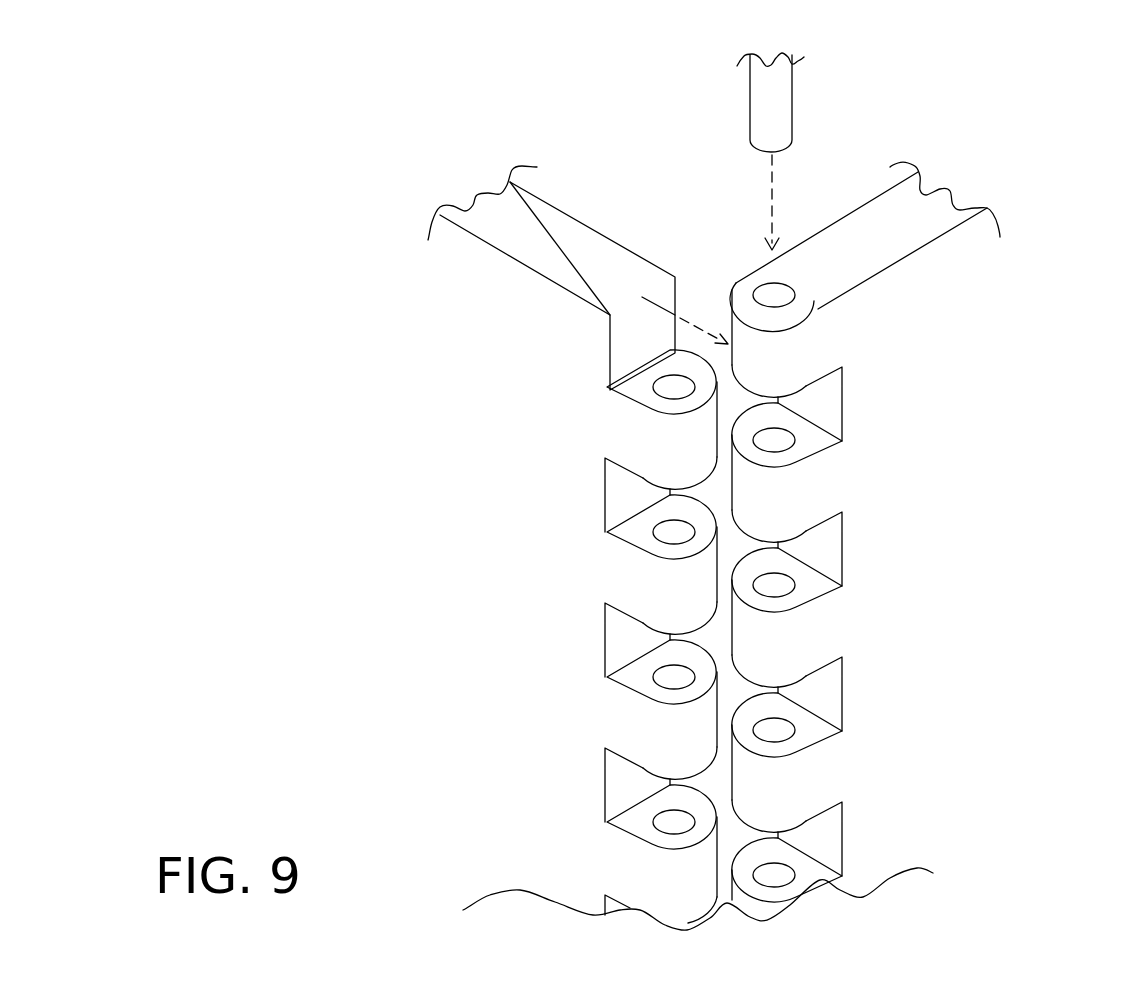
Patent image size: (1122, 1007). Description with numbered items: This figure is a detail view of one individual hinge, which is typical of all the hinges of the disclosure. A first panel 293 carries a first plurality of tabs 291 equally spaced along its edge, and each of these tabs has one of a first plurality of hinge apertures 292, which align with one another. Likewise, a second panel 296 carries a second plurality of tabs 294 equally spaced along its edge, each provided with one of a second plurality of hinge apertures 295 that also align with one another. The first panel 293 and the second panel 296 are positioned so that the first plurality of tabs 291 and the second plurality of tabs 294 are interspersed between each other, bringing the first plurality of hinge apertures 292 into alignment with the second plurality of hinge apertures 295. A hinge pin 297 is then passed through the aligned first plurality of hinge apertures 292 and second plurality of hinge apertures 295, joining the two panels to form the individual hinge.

The first plurality of tabs 291 is at (643, 435).
The first plurality of hinge apertures 292 is at (678, 530).
The first panel 293 is at (502, 270).
The second plurality of tabs 294 is at (818, 365).
The second plurality of hinge apertures 295 is at (778, 442).
The second panel 296 is at (818, 343).
The hinge pin 297 is at (783, 107).